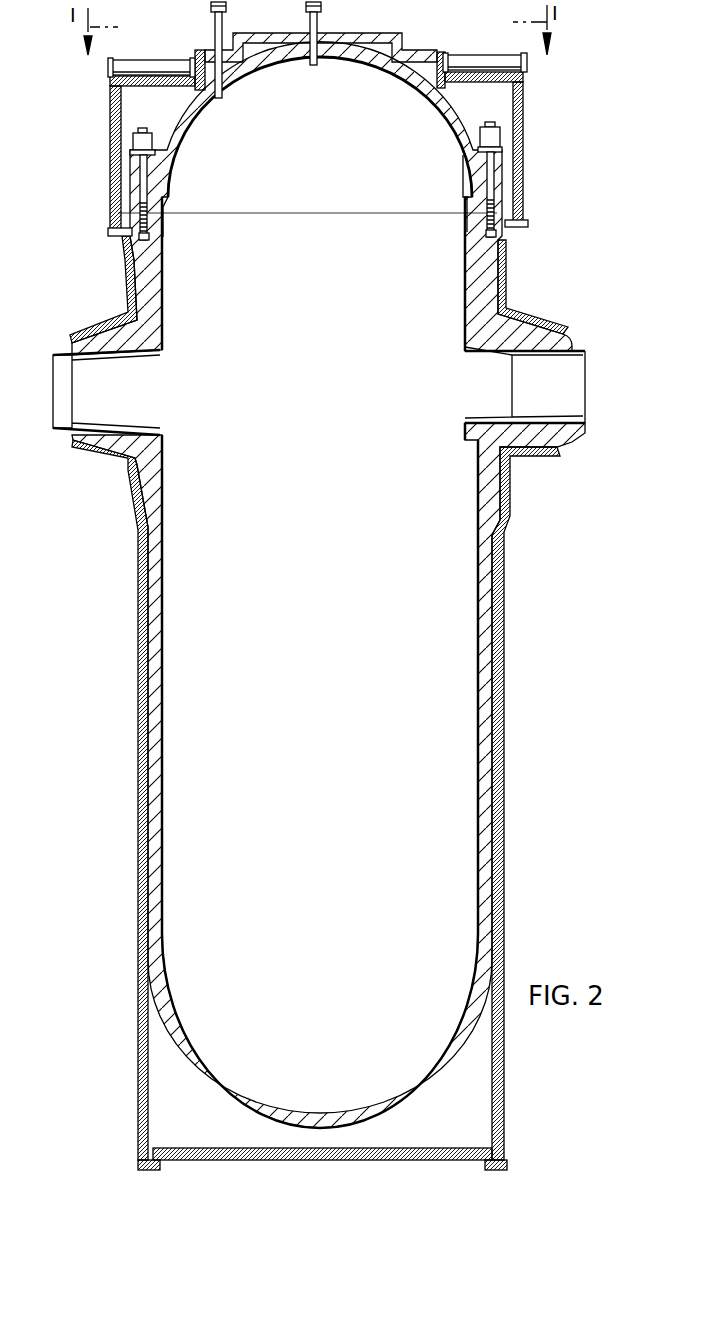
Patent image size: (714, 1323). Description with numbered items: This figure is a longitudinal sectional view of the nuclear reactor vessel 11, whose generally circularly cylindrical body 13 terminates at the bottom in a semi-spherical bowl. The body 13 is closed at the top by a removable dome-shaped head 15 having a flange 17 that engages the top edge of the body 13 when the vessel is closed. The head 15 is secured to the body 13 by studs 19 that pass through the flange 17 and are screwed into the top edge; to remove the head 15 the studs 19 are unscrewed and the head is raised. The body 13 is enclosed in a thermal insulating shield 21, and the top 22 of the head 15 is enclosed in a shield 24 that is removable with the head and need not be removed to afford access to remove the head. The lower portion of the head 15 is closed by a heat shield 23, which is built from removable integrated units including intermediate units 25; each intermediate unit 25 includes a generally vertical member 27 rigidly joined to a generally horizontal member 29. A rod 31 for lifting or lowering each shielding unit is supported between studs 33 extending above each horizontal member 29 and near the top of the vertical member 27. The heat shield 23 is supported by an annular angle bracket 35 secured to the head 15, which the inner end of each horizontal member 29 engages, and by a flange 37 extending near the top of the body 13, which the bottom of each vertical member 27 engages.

The vessel 11 is at (319, 606).
The body 13 is at (485, 613).
The head 15 is at (495, 108).
The flange 17 is at (475, 178).
The studs 19 is at (143, 175).
The thermal insulating shield 21 is at (517, 253).
The top of the head 22 is at (256, 45).
The heat shield 23 is at (523, 123).
The shield 24 is at (326, 34).
The intermediate units 25 is at (106, 62).
The vertical member 27 is at (525, 113).
The horizontal member 29 is at (150, 70).
The rod 31 is at (480, 58).
The studs 33 is at (108, 70).
The annular angle bracket 35 is at (195, 84).
The flange 37 is at (110, 231).